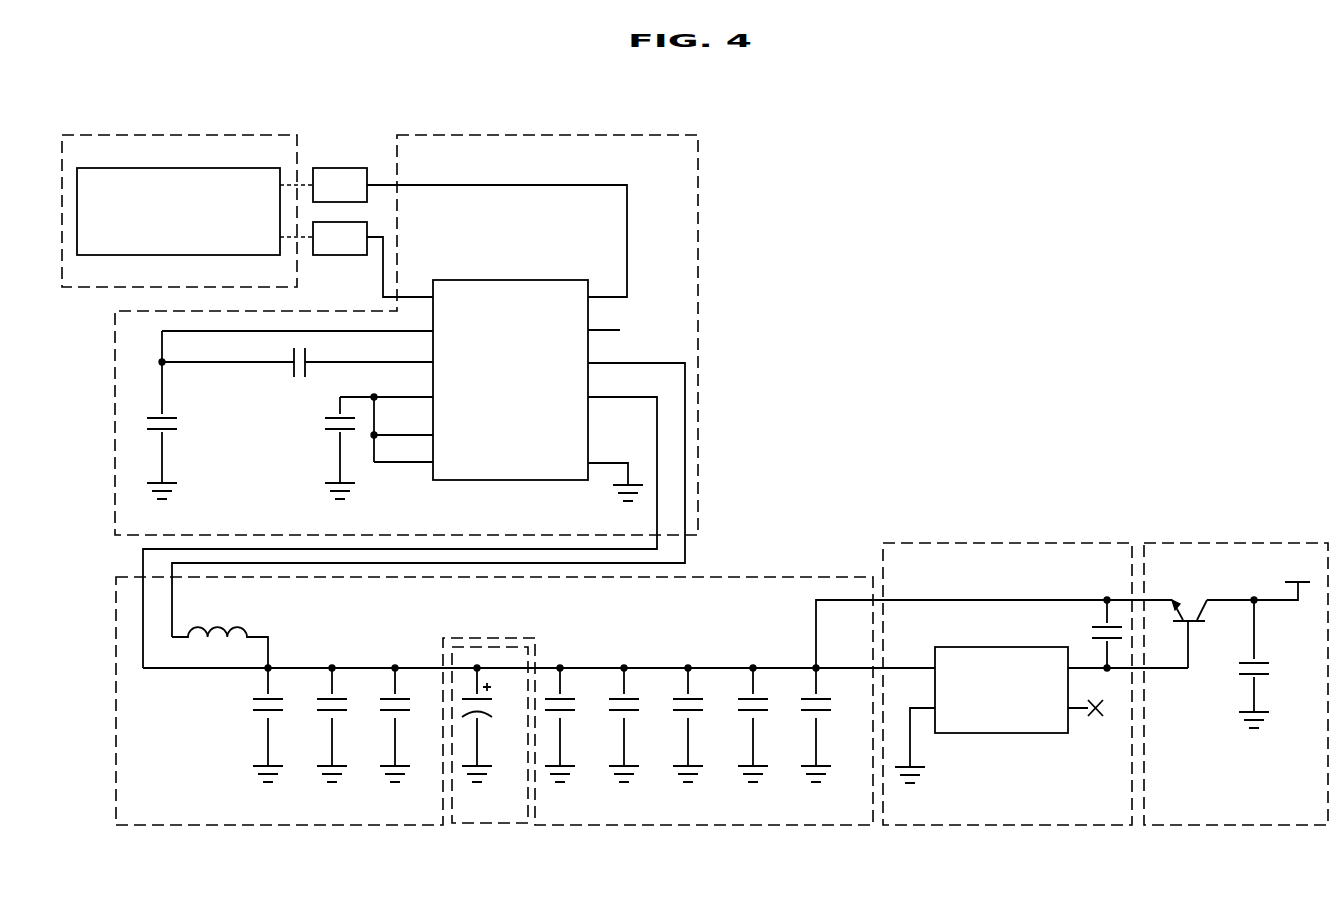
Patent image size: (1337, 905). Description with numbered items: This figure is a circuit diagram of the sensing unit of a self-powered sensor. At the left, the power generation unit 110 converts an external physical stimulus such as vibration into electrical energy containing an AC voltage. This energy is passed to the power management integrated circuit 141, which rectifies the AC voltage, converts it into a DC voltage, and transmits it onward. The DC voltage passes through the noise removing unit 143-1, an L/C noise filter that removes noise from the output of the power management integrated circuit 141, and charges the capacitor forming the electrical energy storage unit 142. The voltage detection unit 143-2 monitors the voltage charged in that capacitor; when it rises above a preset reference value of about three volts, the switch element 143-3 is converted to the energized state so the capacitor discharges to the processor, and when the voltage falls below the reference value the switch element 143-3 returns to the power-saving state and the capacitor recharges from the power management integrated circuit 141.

The power generation unit 110 is at (222, 196).
The power management integrated circuit 141 is at (406, 386).
The electrical energy storage unit 142 is at (490, 763).
The noise removing unit 143-1 is at (644, 728).
The voltage detection unit 143-2 is at (1035, 670).
The switch element 143-3 is at (1236, 670).